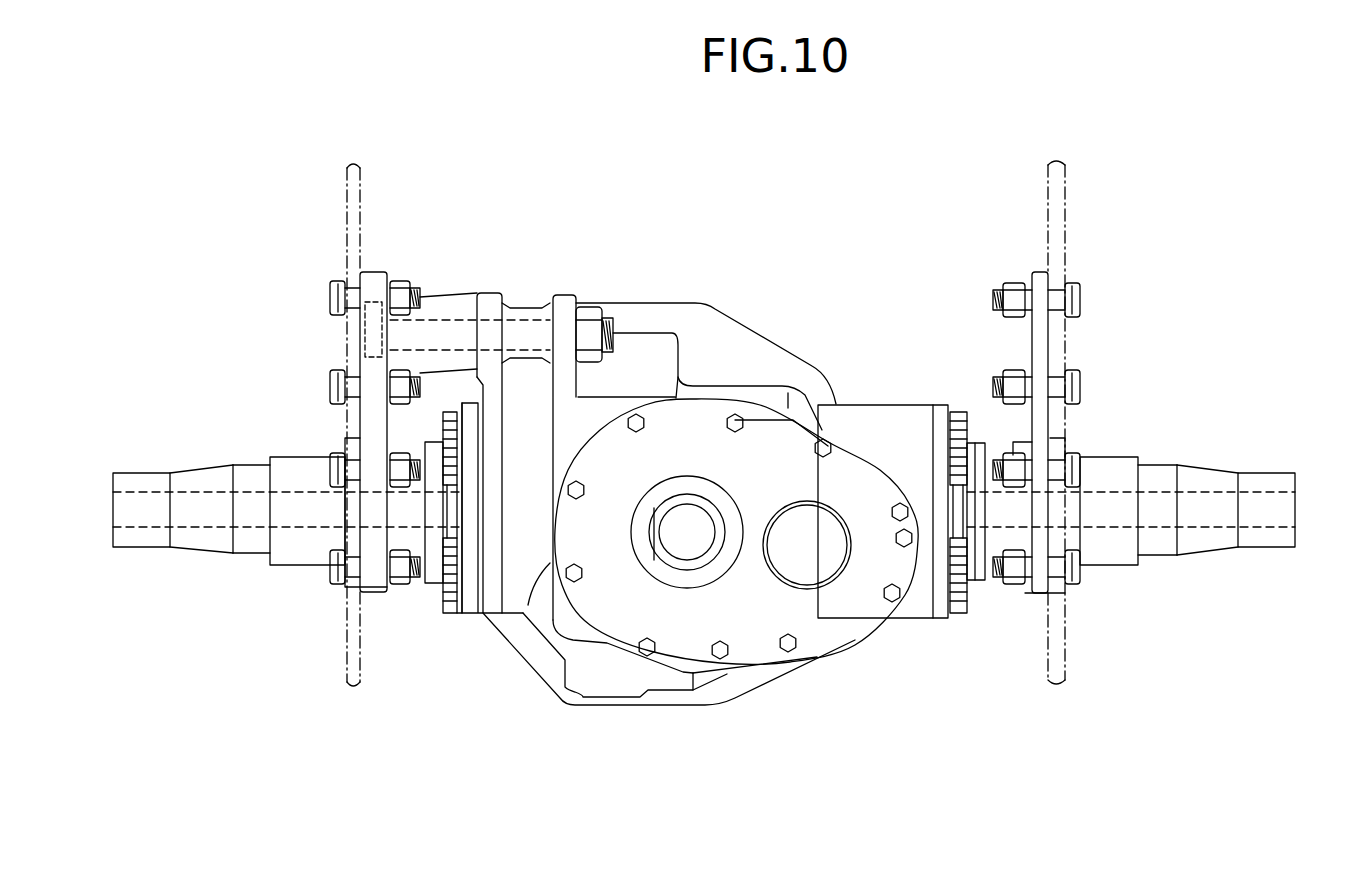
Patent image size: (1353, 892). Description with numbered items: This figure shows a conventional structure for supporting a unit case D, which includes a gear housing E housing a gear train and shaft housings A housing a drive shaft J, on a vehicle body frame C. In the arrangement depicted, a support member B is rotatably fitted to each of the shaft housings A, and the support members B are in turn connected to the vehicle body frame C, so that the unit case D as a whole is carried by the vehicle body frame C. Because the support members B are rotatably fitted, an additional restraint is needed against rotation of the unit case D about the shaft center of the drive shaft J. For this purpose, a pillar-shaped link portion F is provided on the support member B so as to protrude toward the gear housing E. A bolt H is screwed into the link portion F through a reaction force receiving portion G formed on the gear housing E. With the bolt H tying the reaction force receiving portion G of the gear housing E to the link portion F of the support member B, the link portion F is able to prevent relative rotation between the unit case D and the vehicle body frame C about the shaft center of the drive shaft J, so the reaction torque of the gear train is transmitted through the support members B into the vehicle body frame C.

The shaft housing A is at (300, 547).
The support member B is at (372, 282).
The vehicle body frame C is at (340, 228).
The unit case D is at (250, 785).
The gear housing E is at (687, 697).
The link portion F is at (456, 300).
The reaction force receiving portion G is at (490, 300).
The bolt H is at (612, 333).
The drive shaft J is at (197, 490).